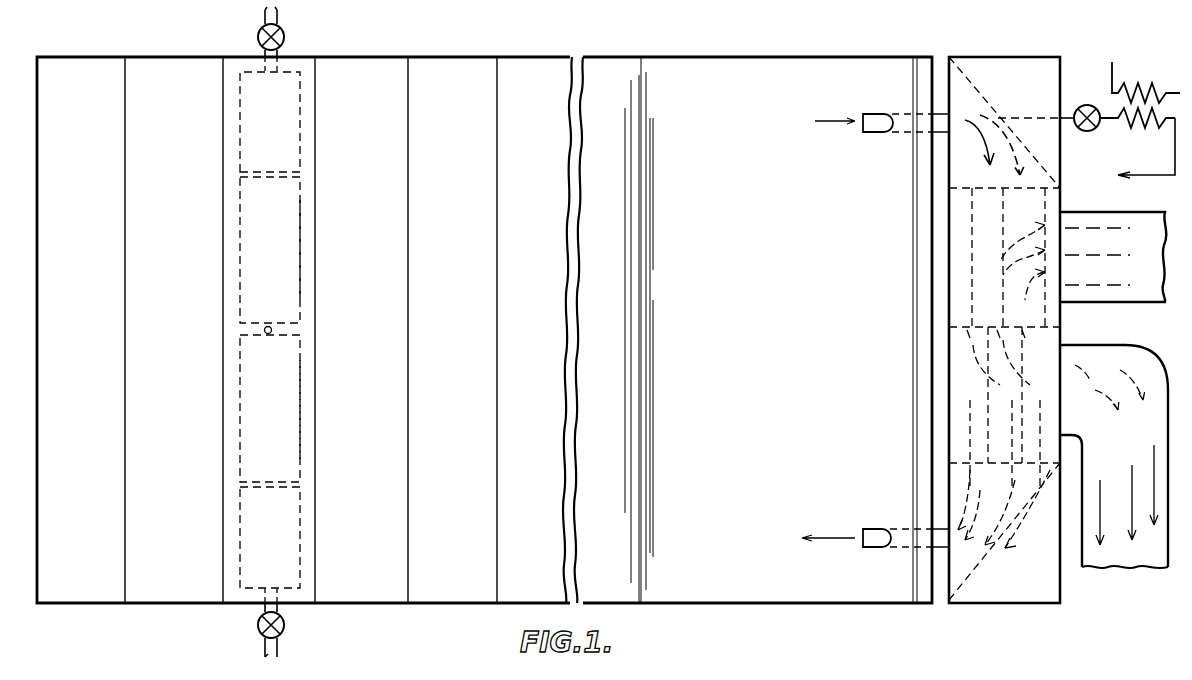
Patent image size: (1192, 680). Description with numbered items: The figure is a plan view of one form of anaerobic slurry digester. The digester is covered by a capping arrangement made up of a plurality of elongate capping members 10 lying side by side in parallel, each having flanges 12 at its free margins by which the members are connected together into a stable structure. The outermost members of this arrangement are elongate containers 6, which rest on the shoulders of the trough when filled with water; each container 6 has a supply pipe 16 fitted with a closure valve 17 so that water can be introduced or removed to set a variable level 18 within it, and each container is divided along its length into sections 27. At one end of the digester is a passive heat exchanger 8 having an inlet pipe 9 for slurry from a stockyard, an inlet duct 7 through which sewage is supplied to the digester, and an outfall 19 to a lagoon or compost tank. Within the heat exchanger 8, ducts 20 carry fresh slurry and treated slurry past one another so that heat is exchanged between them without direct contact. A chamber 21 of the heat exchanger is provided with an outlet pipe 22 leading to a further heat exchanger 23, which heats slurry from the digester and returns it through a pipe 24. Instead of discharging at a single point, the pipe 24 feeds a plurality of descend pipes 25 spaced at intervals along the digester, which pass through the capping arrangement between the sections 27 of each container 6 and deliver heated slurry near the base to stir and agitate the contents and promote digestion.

The elongate container 6 is at (272, 580).
The inlet duct 7 is at (877, 548).
The heat exchanger 8 is at (1032, 565).
The inlet pipe 9 is at (1125, 297).
The elongate capping member 10 is at (378, 596).
The flange 12 is at (309, 489).
The supply pipe 16 is at (280, 50).
The closure valve 17 is at (257, 38).
The variable water level 18 is at (1060, 190).
The outfall 19 is at (1152, 560).
The duct 20 is at (965, 398).
The chamber 21 is at (1012, 78).
The outlet pipe 22 is at (1077, 104).
The heat exchanger 23 is at (1168, 103).
The pipe 24 is at (1173, 159).
The descend pipe 25 is at (272, 330).
The section 27 is at (310, 432).